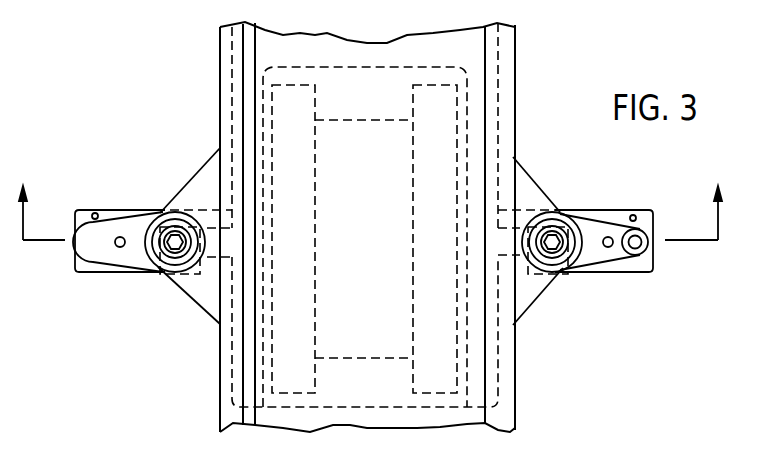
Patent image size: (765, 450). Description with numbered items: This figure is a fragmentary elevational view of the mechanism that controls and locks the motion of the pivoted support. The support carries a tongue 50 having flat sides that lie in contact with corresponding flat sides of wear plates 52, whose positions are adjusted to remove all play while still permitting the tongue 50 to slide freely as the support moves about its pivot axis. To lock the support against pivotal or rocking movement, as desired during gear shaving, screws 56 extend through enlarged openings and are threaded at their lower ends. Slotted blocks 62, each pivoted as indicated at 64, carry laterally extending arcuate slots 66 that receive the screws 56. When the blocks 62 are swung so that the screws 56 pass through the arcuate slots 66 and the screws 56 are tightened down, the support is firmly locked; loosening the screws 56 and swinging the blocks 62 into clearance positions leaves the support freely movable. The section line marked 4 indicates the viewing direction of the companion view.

The section line 4- 4 is at (365, 238).
The tongue 50 is at (335, 359).
The wear plates 52 is at (427, 394).
The screws 56 is at (558, 210).
The slotted blocks 62 is at (606, 211).
The pivot 64 is at (651, 232).
The arcuate slots 66 is at (548, 278).